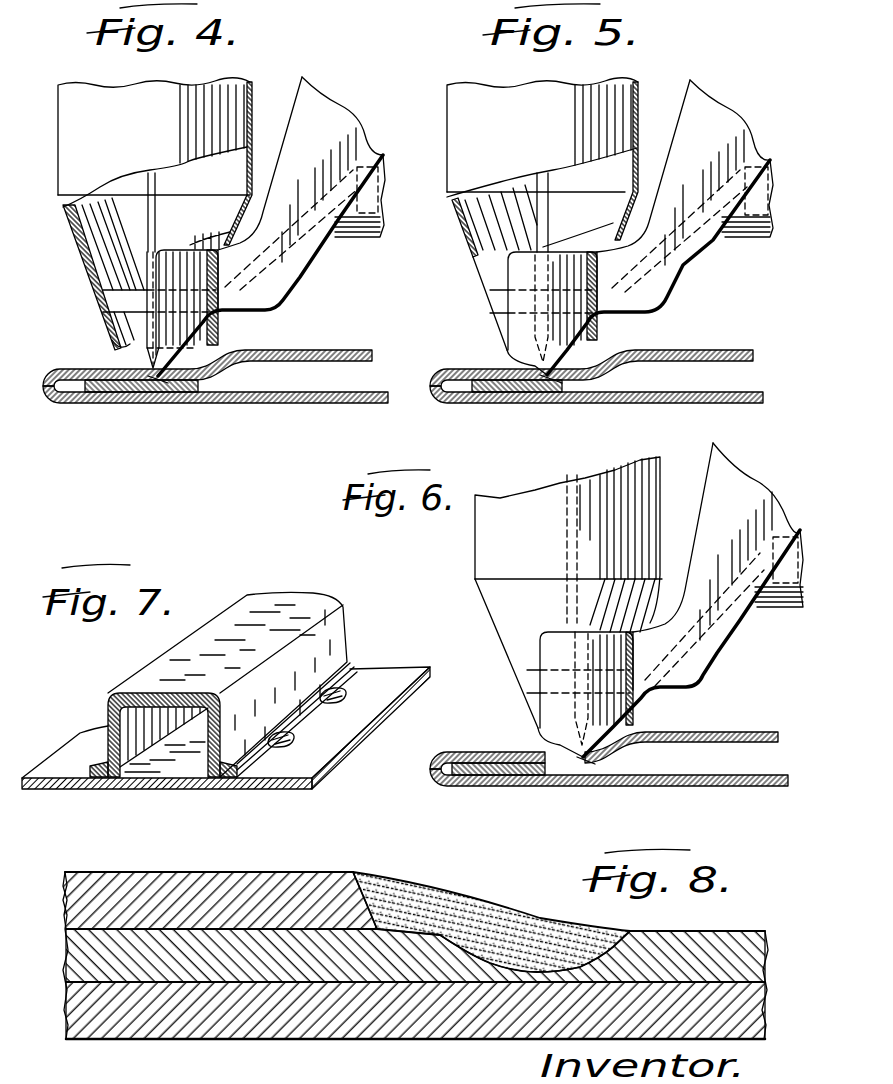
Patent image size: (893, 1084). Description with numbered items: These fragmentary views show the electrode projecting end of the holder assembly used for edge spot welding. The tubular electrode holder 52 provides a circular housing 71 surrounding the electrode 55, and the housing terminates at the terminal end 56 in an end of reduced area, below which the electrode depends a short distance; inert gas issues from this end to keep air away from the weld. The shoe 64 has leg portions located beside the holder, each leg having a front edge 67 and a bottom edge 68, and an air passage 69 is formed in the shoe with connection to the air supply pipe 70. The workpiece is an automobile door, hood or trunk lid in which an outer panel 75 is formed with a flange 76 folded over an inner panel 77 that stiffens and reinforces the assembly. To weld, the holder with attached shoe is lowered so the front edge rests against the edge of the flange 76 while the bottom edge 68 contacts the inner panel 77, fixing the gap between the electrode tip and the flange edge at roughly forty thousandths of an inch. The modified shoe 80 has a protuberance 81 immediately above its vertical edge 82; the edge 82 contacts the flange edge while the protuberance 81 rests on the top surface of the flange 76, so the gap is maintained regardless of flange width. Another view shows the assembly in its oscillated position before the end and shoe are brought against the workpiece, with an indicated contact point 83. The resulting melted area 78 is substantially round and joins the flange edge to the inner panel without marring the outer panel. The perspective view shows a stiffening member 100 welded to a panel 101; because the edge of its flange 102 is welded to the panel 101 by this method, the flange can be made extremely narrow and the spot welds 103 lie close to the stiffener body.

In FIG. 4, the electrode holder 52 is at (82, 146).
In FIG. 5, the electrode holder 52 is at (482, 121).
In FIG. 6, the electrode holder 52 is at (568, 544).
In FIG. 4, the electrode 55 is at (152, 229).
In FIG. 5, the electrode 55 is at (550, 203).
In FIG. 6, the electrode 55 is at (567, 550).
In FIG. 4, the terminal end 56 is at (112, 340).
In FIG. 4, the shoe 64 is at (287, 280).
In FIG. 4, the front edge 67 is at (148, 366).
In FIG. 4, the bottom edge 68 is at (165, 374).
In FIG. 4, the air passage 69 is at (309, 210).
In FIG. 5, the air passage 69 is at (697, 215).
In FIG. 6, the air passage 69 is at (724, 595).
In FIG. 5, the air supply pipe 70 is at (490, 298).
In FIG. 6, the air supply pipe 70 is at (578, 681).
In FIG. 4, the circular housing 71 is at (103, 298).
In FIG. 4, the outer panel 75 is at (262, 400).
In FIG. 5, the outer panel 75 is at (640, 392).
In FIG. 6, the outer panel 75 is at (723, 775).
In FIG. 8, the outer panel 75 is at (343, 1023).
In FIG. 4, the flange 76 is at (102, 394).
In FIG. 5, the flange 76 is at (480, 370).
In FIG. 6, the flange 76 is at (487, 753).
In FIG. 8, the flange 76 is at (248, 885).
In FIG. 4, the inner panel 77 is at (190, 384).
In FIG. 5, the inner panel 77 is at (705, 352).
In FIG. 6, the inner panel 77 is at (680, 733).
In FIG. 8, the inner panel 77 is at (140, 938).
In FIG. 8, the melted area 78 is at (474, 900).
In FIG. 5, the shoe 80 is at (680, 273).
In FIG. 6, the shoe 80 is at (722, 638).
In FIG. 5, the protuberance 81 is at (512, 357).
In FIG. 6, the protuberance 81 is at (547, 742).
In FIG. 5, the vertical edge 82 is at (557, 373).
In FIG. 6, the vertical edge 82 is at (577, 755).
In FIG. 5, the contact point 83 is at (560, 386).
In FIG. 6, the contact point 83 is at (583, 762).
In FIG. 7, the stiffening member 100 is at (232, 622).
In FIG. 7, the panel 101 is at (128, 786).
In FIG. 7, the flange 102 is at (333, 683).
In FIG. 7, the spot weld 103 is at (277, 733).